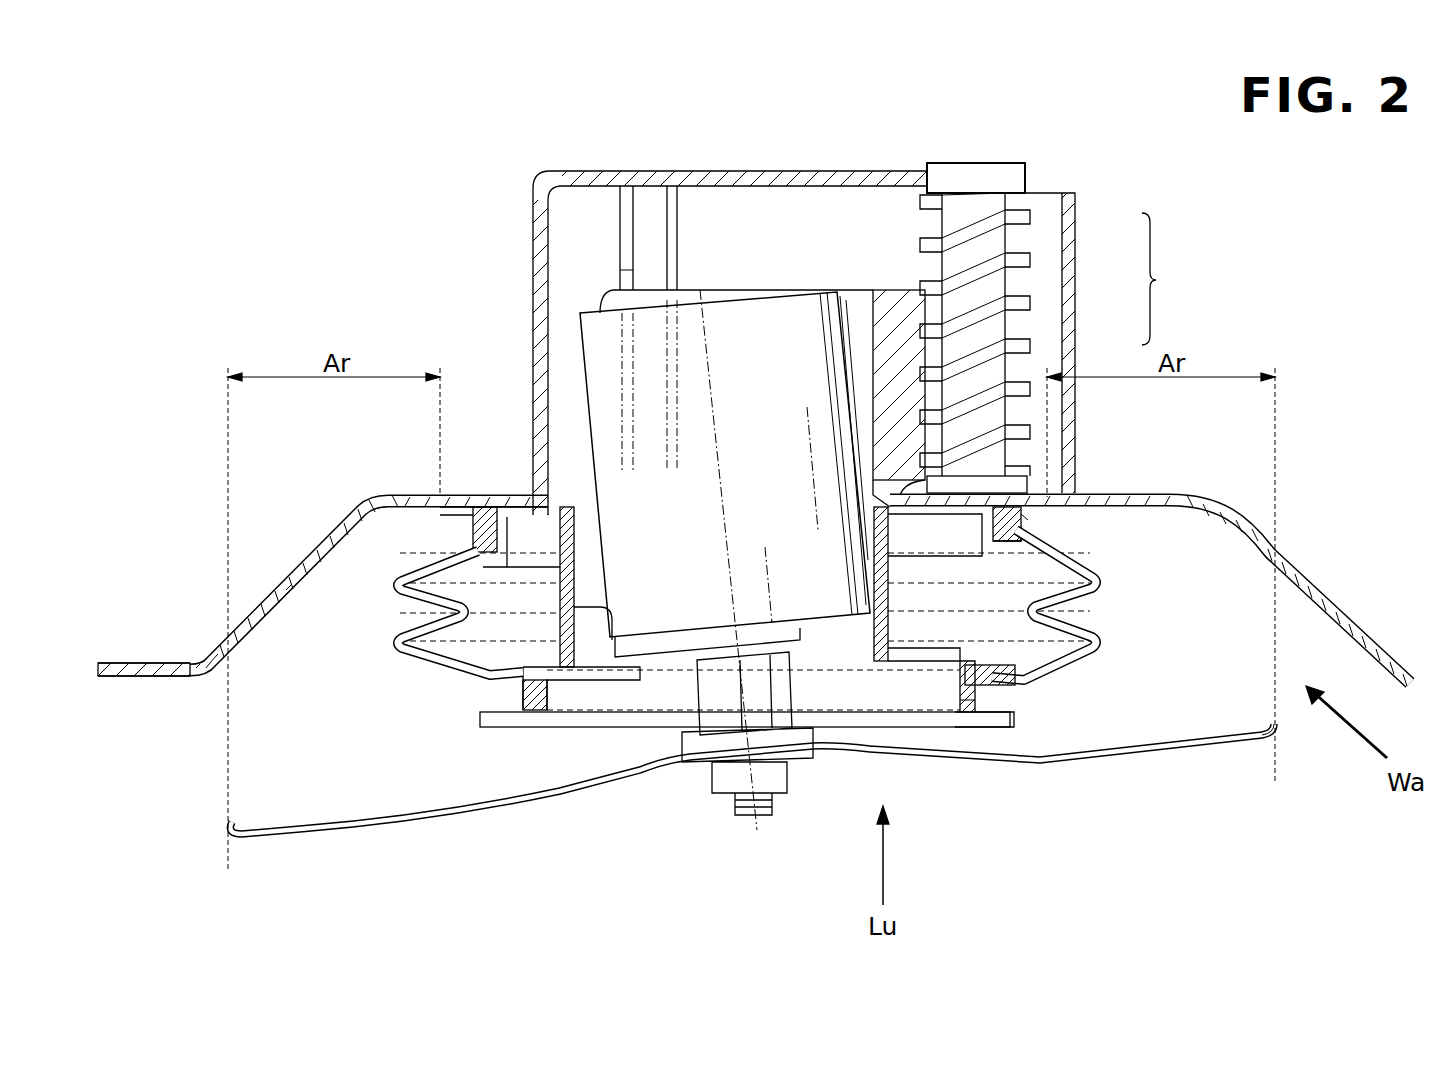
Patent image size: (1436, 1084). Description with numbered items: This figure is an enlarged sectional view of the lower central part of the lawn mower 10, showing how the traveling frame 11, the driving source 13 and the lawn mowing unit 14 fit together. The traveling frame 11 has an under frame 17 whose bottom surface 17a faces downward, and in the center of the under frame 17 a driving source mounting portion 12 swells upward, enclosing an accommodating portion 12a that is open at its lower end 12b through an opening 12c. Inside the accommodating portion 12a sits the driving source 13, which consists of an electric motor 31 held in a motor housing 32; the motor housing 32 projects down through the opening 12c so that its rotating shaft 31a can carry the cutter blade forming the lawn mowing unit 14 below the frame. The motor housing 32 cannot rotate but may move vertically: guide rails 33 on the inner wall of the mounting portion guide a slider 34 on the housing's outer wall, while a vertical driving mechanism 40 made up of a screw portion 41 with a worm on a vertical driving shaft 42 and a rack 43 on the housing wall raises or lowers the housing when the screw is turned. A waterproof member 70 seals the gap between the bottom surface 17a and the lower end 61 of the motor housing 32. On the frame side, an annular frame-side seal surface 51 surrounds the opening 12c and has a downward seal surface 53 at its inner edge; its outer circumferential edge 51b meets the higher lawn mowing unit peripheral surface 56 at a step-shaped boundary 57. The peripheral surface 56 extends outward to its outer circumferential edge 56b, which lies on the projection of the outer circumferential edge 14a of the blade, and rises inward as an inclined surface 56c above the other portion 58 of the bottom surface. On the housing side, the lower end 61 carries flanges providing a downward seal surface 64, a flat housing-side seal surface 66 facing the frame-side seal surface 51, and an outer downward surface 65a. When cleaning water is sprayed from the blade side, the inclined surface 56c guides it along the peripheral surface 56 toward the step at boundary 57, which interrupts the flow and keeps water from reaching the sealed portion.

The lawn mower 10 is at (205, 166).
The traveling frame 11 is at (144, 669).
The driving source mounting portion 12 is at (804, 312).
The accommodating portion 12a is at (610, 247).
The lower end of the driving source mounting portion 12b is at (953, 518).
The opening 12c is at (880, 520).
The driving source 13 is at (676, 455).
The lawn mowing unit 14 is at (1192, 755).
The outer circumferential edge of the lawn mowing unit 14a is at (1280, 733).
The under frame 17 is at (127, 719).
The bottom surface 17a is at (158, 679).
The electric motor 31 is at (782, 303).
The rotating shaft 31a is at (698, 765).
The motor housing 32 is at (858, 300).
The guide rails 33 is at (620, 270).
The slider 34 is at (647, 353).
The vertical driving mechanism 40 is at (1058, 328).
The screw portion 41 is at (1003, 300).
The driving shaft 42 is at (990, 329).
The rack 43 is at (1000, 262).
The frame-side seal surface 51 is at (1035, 542).
The outer circumferential edge of the frame-side seal surface 51b is at (1026, 516).
The downward seal surface 53 is at (1010, 546).
The lawn mowing unit peripheral surface 56 is at (398, 511).
The outer circumferential edge of the lawn mowing unit peripheral surface 56b is at (228, 655).
The inclined surface 56c is at (293, 590).
The boundary 57 is at (438, 513).
The other portion of the bottom surface 58 is at (213, 672).
The lower end of the motor housing 61 is at (887, 652).
The downward seal surface 64 is at (973, 702).
The downward surface 65a is at (1017, 720).
The housing-side seal surface 66 is at (1010, 700).
The waterproof member 70 is at (1086, 662).